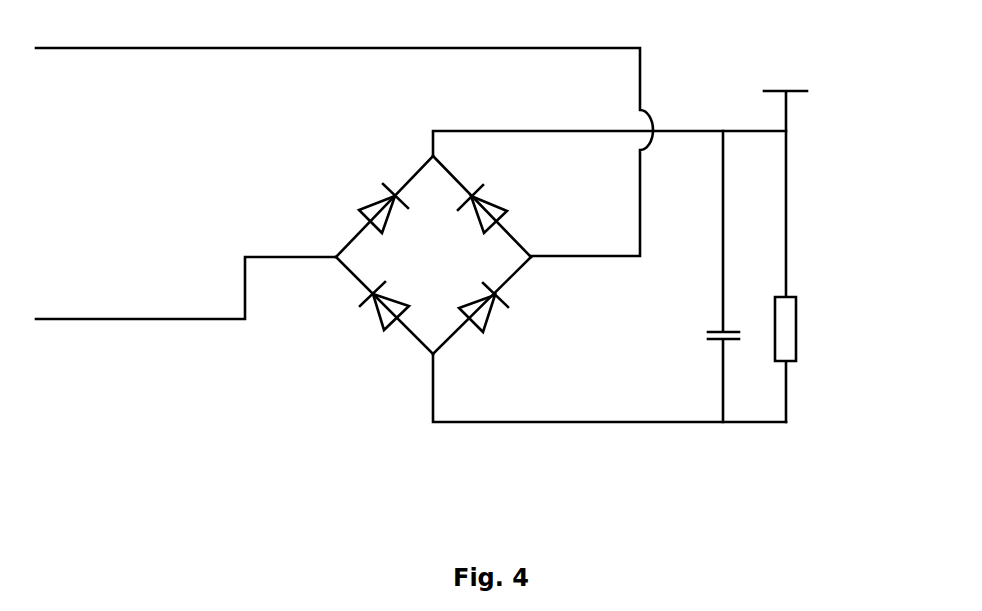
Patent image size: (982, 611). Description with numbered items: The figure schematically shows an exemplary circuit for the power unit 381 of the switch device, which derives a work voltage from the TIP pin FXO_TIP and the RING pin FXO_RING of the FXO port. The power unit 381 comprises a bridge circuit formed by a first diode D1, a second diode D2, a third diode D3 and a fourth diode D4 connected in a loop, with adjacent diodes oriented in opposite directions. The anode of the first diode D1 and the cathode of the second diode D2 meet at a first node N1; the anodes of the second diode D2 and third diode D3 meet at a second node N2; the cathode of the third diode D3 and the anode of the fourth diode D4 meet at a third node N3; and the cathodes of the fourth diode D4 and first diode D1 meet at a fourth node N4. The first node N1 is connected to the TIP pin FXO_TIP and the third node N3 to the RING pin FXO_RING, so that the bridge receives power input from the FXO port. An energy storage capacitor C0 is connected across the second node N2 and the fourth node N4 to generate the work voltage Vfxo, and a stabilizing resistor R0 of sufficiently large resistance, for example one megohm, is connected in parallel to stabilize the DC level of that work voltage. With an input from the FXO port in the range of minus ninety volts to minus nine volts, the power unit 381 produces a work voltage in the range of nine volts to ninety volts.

The power unit 381 is at (489, 273).
The first diode D1 is at (378, 201).
The second diode D2 is at (379, 312).
The third diode D3 is at (496, 313).
The fourth diode D4 is at (489, 201).
The first node N1 is at (359, 258).
The second node N2 is at (433, 339).
The third node N3 is at (515, 262).
The fourth node N4 is at (433, 178).
The energy storage capacitor C0 is at (705, 276).
The stabilizing resistor R0 is at (802, 256).